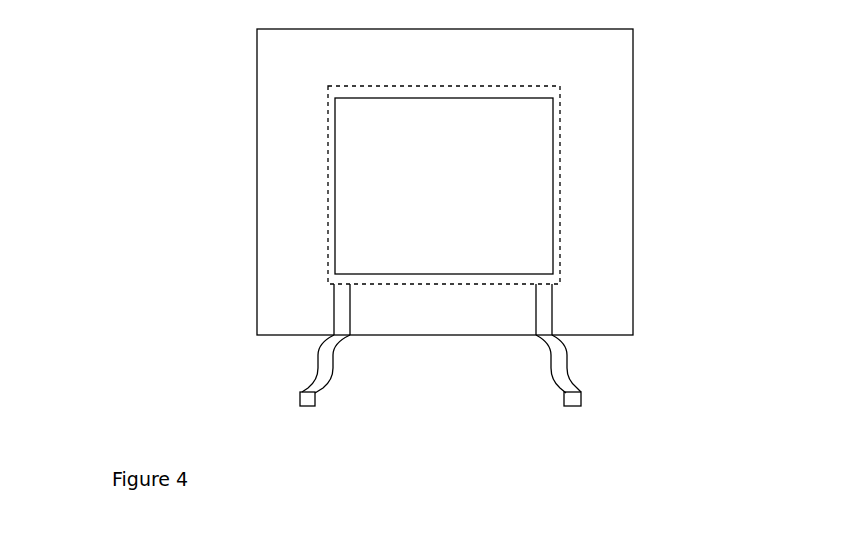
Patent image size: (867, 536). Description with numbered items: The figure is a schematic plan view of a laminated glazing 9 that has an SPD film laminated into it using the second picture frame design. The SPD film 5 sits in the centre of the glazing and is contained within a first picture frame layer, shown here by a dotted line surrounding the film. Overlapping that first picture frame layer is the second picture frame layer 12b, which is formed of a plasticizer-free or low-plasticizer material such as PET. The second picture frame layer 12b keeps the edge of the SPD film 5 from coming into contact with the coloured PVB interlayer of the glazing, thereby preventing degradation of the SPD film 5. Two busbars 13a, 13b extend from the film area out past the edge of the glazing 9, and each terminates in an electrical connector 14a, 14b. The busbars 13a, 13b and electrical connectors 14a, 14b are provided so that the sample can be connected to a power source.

The glazing 9 is at (183, 198).
The SPD film 5 is at (513, 200).
The second picture frame layer 12b is at (560, 247).
The busbar 13a is at (322, 358).
The busbar 13b is at (557, 363).
The electrical connector 14a is at (313, 407).
The electrical connector 14b is at (580, 405).